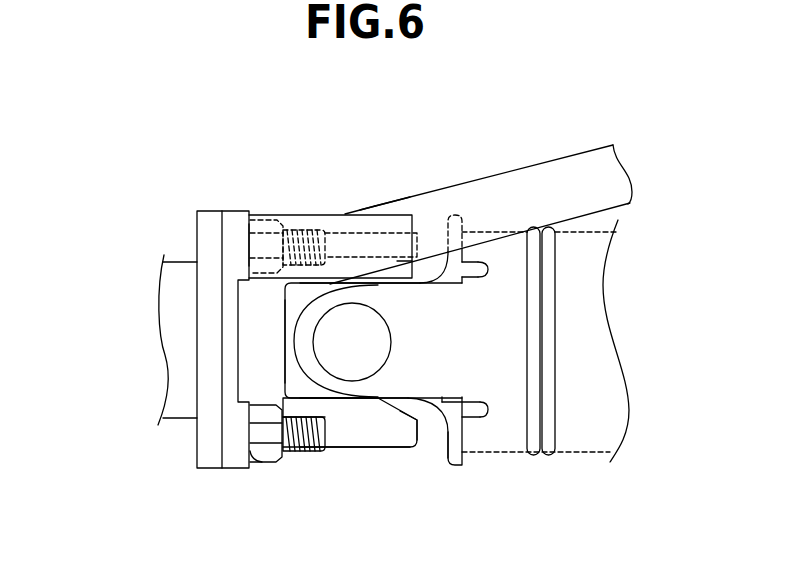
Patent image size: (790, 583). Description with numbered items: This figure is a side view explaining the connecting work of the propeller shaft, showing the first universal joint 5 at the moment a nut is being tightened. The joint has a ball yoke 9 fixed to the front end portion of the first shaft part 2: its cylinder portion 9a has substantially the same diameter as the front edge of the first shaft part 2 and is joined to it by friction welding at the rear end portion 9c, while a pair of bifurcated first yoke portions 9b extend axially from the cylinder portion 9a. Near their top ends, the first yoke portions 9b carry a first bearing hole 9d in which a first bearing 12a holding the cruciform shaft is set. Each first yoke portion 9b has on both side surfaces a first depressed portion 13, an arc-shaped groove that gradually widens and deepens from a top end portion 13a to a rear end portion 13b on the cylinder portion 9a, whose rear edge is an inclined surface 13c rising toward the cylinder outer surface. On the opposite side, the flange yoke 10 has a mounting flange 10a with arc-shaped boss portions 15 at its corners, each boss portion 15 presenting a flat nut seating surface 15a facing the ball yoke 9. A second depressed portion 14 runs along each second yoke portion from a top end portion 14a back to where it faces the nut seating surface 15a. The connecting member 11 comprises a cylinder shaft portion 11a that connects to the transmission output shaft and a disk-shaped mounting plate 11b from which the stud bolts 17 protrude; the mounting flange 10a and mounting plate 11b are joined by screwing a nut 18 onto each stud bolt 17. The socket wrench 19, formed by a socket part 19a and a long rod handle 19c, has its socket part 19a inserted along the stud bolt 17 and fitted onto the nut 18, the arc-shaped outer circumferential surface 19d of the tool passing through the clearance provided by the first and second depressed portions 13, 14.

The first shaft part 2 is at (613, 413).
The first universal joint 5 is at (347, 459).
The ball yoke 9 is at (432, 452).
The cylinder portion 9a is at (518, 424).
The first yoke portion 9b is at (312, 363).
The rear end portion 9c is at (533, 424).
The first bearing hole 9d is at (371, 307).
The flange yoke 10 is at (293, 459).
The mounting flange 10a is at (229, 353).
The connecting member 11 is at (177, 247).
The cylinder shaft portion 11a is at (168, 293).
The mounting plate 11b is at (209, 430).
The first bearing 12a is at (338, 343).
The first depressed portion 13 is at (421, 283).
The top end portion 13a is at (402, 395).
The rear end portion 13b is at (452, 266).
The inclined surface 13c is at (479, 262).
The second depressed portion 14 is at (368, 441).
The top end portion 14a is at (408, 433).
The boss portion 15 is at (232, 213).
The nut seating surface 15a is at (259, 224).
The stud bolt 17 is at (300, 233).
The nut 18 is at (271, 226).
The socket wrench 19 is at (399, 177).
The socket part 19a is at (392, 214).
The rod handle 19c is at (588, 168).
The outer circumferential surface 19d is at (340, 208).